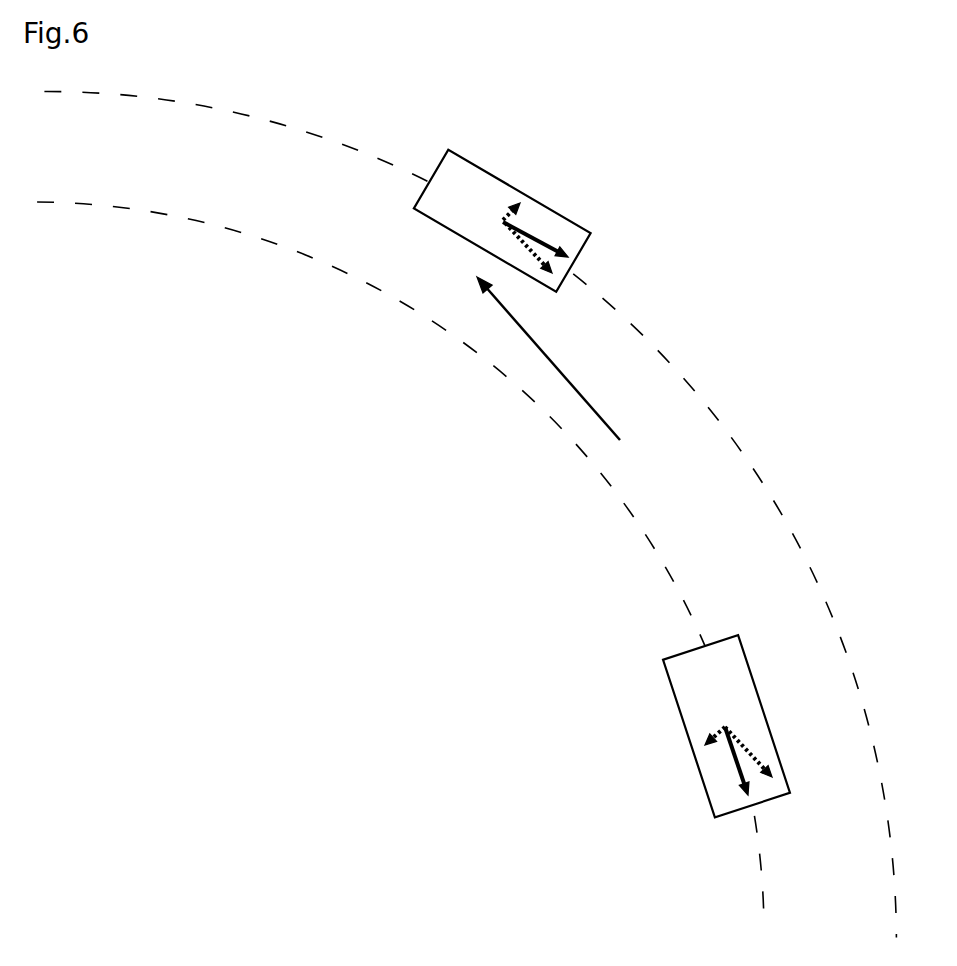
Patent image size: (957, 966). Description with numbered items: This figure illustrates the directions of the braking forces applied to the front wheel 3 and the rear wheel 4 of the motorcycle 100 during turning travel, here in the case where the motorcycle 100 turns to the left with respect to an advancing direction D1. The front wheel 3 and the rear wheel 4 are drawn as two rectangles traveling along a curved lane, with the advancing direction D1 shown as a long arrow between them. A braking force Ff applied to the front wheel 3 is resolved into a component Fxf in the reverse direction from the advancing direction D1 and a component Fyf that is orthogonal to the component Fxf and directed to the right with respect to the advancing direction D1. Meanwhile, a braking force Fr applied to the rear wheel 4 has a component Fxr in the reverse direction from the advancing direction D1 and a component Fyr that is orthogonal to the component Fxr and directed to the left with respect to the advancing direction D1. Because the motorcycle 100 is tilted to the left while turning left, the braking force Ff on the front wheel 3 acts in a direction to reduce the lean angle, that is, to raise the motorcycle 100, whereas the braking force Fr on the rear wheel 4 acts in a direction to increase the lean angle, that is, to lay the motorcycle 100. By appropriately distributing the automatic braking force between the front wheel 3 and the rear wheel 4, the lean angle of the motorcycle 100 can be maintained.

The front wheel 3 is at (465, 158).
The rear wheel 4 is at (668, 682).
The motorcycle 100 is at (788, 328).
The braking force applied to the front wheel Ff is at (540, 236).
The component of the front-wheel braking force in the reverse direction Fxf is at (520, 231).
The component of the front-wheel braking force directed to the right Fyf is at (508, 216).
The braking force applied to the rear wheel Fr is at (740, 772).
The component of the rear-wheel braking force in the reverse direction Fxr is at (745, 745).
The component of the rear-wheel braking force directed to the left Fyr is at (713, 728).
The advancing direction D1 is at (545, 358).